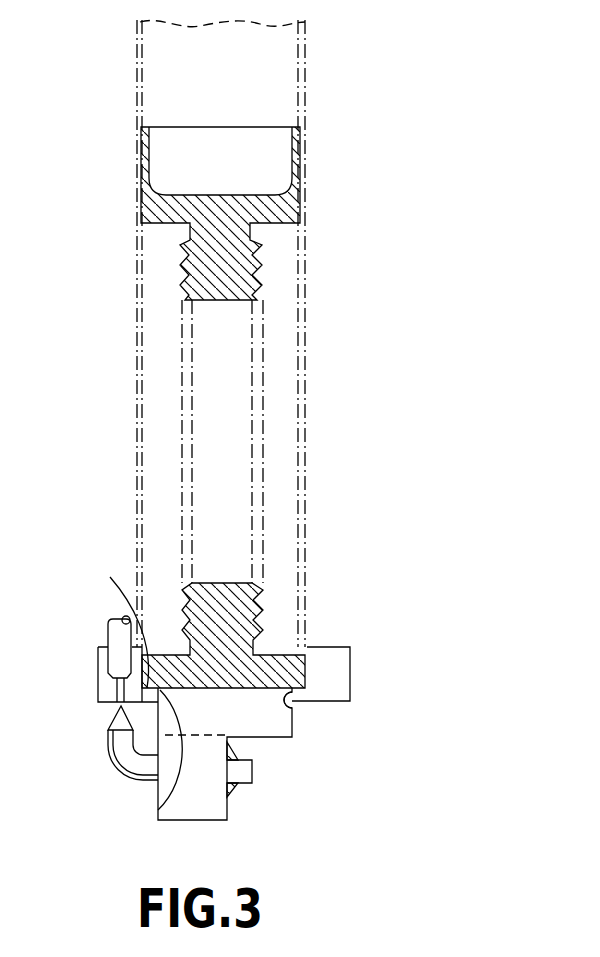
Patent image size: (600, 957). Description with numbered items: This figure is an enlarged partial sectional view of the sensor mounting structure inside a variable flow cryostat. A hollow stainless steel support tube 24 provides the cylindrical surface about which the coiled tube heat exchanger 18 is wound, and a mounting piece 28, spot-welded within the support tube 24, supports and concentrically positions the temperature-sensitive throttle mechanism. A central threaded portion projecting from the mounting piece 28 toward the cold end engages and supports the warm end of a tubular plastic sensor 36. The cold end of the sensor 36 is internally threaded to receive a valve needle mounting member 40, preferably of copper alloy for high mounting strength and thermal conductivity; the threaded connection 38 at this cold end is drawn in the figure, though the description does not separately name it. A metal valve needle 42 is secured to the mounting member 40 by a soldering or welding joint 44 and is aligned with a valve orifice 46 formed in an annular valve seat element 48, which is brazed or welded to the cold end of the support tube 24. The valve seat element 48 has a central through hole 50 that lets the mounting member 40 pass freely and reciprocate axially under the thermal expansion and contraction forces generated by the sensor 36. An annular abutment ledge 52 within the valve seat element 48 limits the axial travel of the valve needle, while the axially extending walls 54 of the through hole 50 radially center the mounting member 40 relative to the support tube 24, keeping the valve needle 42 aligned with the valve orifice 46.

The coiled tube heat exchanger 18 is at (110, 632).
The support tube 24 is at (137, 62).
The mounting piece 28 is at (140, 208).
The tubular plastic sensor 36 is at (283, 400).
The threaded block 38 is at (245, 607).
The valve needle mounting member 40 is at (286, 735).
The valve needle 42 is at (120, 775).
The joint 44 is at (240, 775).
The valve orifice 46 is at (110, 703).
The valve seat element 48 is at (337, 668).
The through hole 50 is at (293, 710).
The abutment ledge 52 is at (117, 613).
The axially extending walls 54 is at (158, 810).